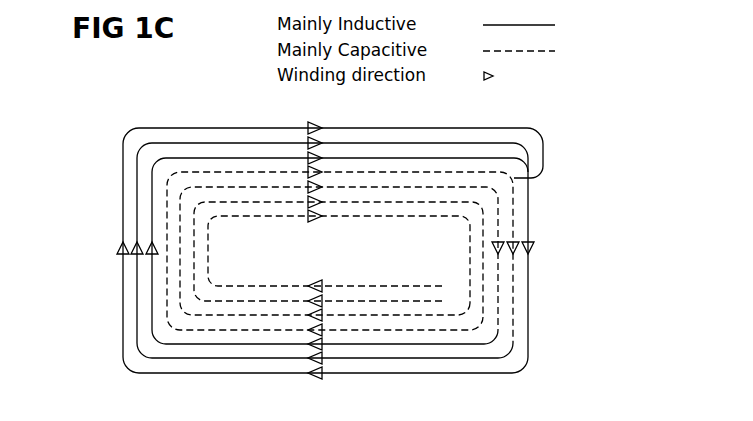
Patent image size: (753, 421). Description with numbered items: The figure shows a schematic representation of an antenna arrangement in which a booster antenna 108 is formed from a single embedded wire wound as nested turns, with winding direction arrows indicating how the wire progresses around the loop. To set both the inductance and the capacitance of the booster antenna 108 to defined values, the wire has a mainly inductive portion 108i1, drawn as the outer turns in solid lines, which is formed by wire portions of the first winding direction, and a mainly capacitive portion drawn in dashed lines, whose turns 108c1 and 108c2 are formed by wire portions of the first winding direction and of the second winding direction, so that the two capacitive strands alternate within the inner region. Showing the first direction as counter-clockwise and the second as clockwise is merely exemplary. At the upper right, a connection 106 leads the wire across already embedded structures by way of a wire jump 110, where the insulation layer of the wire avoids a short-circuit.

The connection portion of coil 106 is at (578, 168).
The booster antenna 108 is at (528, 331).
The mainly inductive wire portion 108i1 is at (152, 276).
The mainly capacitive wire portion 108c1 is at (250, 201).
The mainly capacitive wire portion 108c2 is at (403, 187).
The wire jump 110 is at (540, 188).